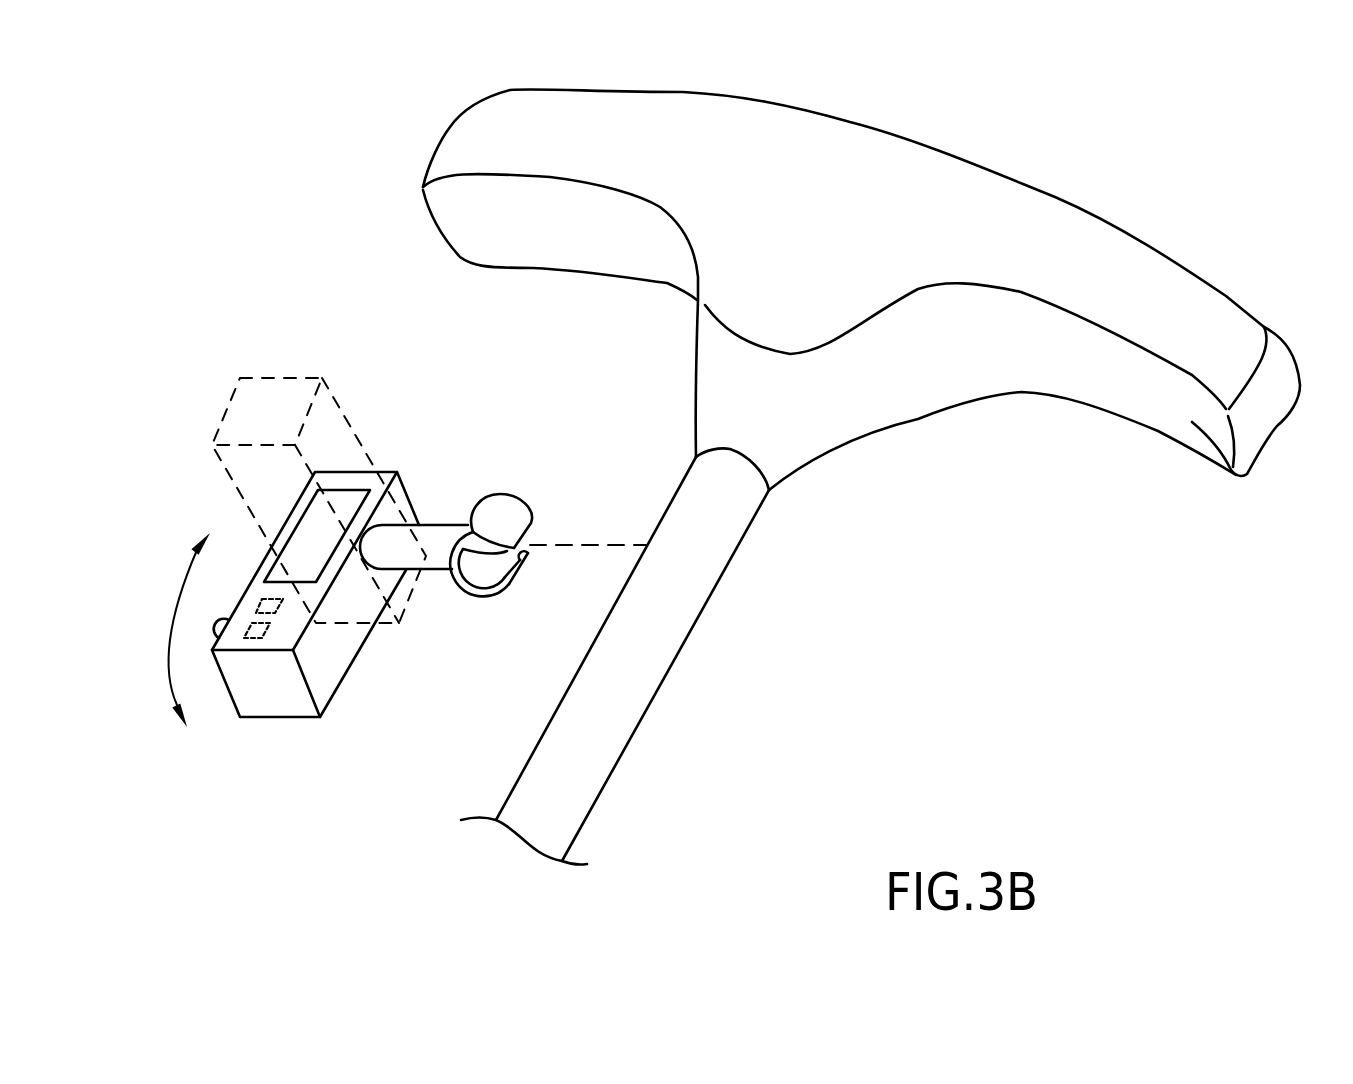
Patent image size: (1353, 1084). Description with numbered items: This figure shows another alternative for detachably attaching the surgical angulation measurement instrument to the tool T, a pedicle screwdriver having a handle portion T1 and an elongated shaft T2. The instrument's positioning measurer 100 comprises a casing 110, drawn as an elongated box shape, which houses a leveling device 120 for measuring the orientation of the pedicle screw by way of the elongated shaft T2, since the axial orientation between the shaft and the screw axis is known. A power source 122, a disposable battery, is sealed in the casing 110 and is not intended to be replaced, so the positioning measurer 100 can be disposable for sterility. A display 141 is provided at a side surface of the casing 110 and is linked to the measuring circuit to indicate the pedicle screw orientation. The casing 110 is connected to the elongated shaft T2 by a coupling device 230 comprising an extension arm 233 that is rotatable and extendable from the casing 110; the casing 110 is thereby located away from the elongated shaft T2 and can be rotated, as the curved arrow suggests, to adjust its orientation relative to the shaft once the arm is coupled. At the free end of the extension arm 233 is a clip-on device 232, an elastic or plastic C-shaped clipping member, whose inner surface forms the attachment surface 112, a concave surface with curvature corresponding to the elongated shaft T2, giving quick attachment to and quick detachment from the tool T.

The positioning measurer 100 is at (264, 529).
The casing 110 is at (387, 476).
The display 141 is at (313, 540).
The leveling device 120 is at (272, 616).
The power source 122 is at (262, 640).
The attachment surface 112 is at (493, 600).
The coupling device 230 is at (503, 541).
The clip-on device 232 is at (507, 515).
The extension arm 233 is at (428, 545).
The tool T is at (861, 476).
The handle portion T1 is at (870, 376).
The elongated shaft T2 is at (615, 656).